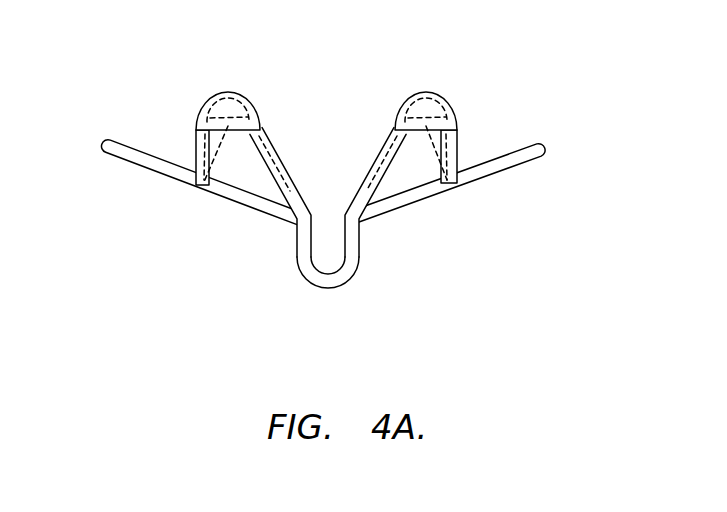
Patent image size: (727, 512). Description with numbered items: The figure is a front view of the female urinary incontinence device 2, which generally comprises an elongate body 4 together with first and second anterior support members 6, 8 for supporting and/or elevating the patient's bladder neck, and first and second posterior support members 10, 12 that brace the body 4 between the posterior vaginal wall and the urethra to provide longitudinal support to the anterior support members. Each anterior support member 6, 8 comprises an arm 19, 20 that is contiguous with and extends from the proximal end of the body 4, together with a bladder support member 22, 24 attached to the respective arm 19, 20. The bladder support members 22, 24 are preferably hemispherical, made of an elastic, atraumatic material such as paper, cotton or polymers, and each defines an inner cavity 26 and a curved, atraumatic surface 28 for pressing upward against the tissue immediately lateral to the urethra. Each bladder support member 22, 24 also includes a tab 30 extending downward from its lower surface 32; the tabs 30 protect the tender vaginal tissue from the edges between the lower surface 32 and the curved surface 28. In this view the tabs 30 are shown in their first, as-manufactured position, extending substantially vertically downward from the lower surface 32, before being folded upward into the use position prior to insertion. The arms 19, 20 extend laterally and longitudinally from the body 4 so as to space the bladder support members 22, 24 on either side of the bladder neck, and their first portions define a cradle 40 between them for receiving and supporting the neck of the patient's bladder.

The female urinary incontinence device 2 is at (337, 153).
The elongate body 4 is at (303, 263).
The first anterior support member 6 is at (461, 144).
The second anterior support member 8 is at (211, 129).
The first posterior support member 10 is at (551, 148).
The second posterior support member 12 is at (125, 164).
The arm 19 is at (382, 143).
The arm 20 is at (280, 150).
The bladder support member 22 is at (438, 144).
The bladder support member 24 is at (236, 107).
The inner cavity 26 is at (199, 171).
The curved atraumatic surface 28 is at (238, 92).
The tab 30 is at (462, 155).
The lower surface 32 is at (429, 133).
The cradle 40 is at (335, 247).